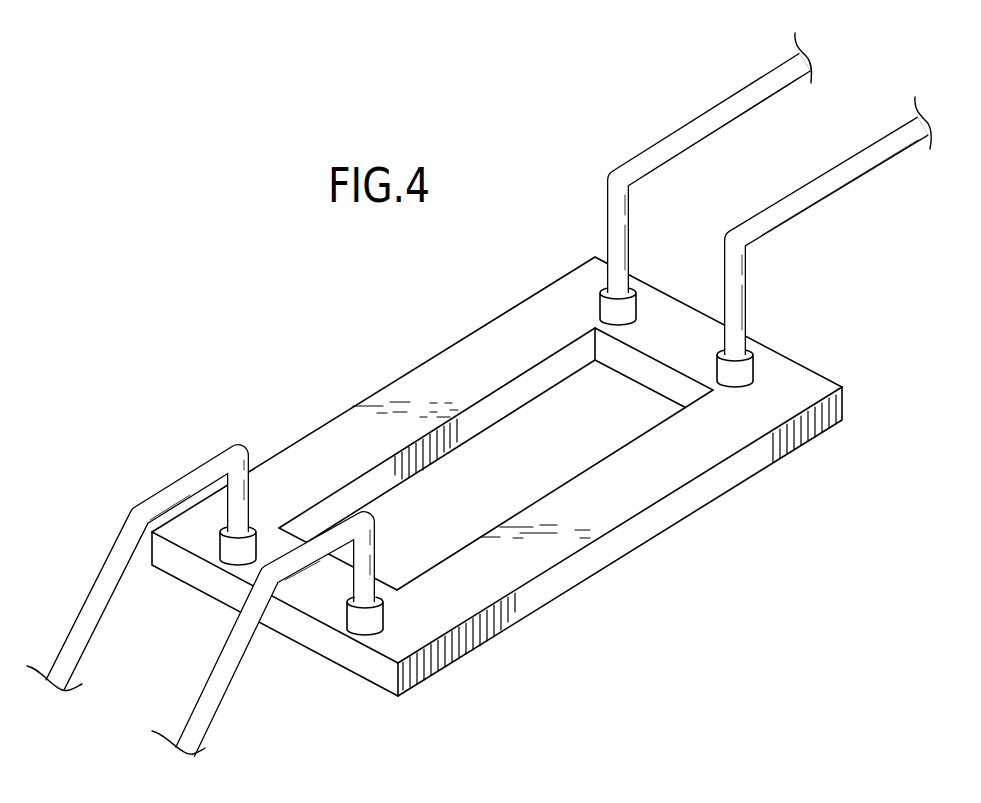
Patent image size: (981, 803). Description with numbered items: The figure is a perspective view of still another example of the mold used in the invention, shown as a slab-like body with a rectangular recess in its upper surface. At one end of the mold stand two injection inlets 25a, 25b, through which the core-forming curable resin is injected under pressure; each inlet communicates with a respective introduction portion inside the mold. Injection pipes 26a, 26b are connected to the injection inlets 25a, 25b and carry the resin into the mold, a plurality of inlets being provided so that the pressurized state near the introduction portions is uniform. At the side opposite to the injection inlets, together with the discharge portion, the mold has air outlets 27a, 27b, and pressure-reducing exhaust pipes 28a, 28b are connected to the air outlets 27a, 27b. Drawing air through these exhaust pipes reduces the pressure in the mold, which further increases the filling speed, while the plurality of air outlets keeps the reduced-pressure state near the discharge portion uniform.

The injection inlet 25a is at (632, 308).
The injection inlet 25b is at (753, 366).
The injection pipe 26a is at (707, 123).
The injection pipe 26b is at (836, 168).
The air outlet 27a is at (233, 547).
The air outlet 27b is at (365, 616).
The pressure-reducing exhaust pipe 28a is at (88, 622).
The pressure-reducing exhaust pipe 28b is at (357, 619).